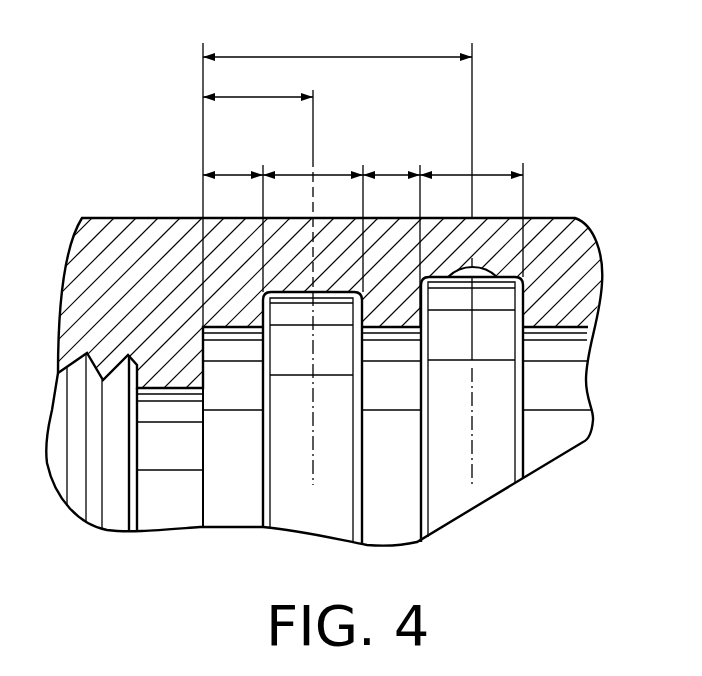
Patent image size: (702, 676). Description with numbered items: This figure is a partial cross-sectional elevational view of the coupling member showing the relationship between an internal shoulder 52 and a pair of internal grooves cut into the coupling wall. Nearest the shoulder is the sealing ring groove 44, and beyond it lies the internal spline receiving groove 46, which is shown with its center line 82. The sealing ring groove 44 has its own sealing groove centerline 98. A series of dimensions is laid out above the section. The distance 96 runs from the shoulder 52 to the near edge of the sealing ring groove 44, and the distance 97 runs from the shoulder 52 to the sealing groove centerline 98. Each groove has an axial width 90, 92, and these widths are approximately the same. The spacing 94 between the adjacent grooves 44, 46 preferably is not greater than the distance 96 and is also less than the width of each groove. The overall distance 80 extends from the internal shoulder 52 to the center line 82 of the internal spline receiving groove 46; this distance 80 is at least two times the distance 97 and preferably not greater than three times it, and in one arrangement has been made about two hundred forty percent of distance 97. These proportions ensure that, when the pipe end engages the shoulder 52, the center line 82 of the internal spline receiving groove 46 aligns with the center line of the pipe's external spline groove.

The sealing ring groove 44 is at (300, 512).
The internal spline receiving groove 46 is at (468, 502).
The internal shoulder 52 is at (203, 373).
The distance 80 is at (335, 56).
The center line 82 is at (472, 155).
The axial width 90 is at (325, 174).
The axial width 92 is at (460, 173).
The spacing 94 is at (388, 173).
The distance 96 is at (230, 174).
The distance 97 is at (258, 96).
The sealing groove centerline 98 is at (315, 127).